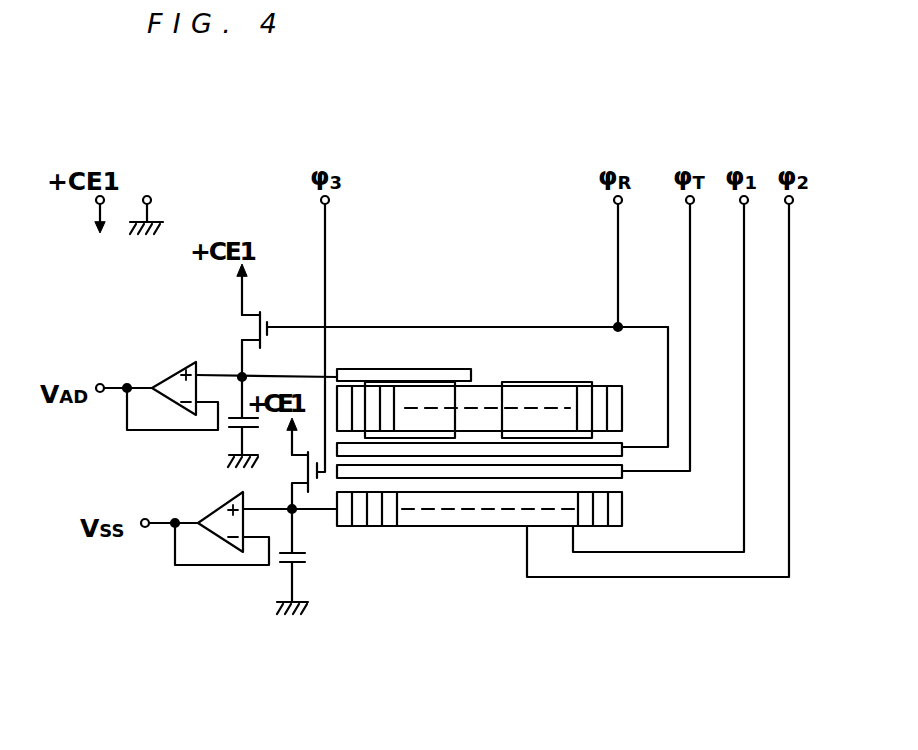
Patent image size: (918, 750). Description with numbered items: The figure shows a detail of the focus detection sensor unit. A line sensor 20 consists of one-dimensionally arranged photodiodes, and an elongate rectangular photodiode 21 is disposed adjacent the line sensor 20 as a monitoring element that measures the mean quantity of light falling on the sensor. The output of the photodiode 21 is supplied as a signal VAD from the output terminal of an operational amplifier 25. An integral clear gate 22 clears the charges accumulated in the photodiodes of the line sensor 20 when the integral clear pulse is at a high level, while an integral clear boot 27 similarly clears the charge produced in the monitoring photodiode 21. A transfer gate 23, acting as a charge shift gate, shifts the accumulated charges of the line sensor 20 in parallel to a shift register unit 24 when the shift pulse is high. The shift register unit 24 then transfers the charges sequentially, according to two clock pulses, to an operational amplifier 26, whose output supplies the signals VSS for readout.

The line sensor 20 is at (622, 402).
The photodiode 21 is at (427, 368).
The integral clear gate 22 is at (622, 452).
The transfer gate 23 is at (622, 478).
The shift register unit 24 is at (613, 526).
The operational amplifier 25 is at (173, 372).
The operational amplifier 26 is at (225, 540).
The integral clear boot 27 is at (247, 315).